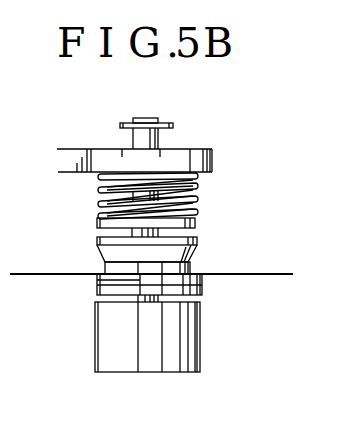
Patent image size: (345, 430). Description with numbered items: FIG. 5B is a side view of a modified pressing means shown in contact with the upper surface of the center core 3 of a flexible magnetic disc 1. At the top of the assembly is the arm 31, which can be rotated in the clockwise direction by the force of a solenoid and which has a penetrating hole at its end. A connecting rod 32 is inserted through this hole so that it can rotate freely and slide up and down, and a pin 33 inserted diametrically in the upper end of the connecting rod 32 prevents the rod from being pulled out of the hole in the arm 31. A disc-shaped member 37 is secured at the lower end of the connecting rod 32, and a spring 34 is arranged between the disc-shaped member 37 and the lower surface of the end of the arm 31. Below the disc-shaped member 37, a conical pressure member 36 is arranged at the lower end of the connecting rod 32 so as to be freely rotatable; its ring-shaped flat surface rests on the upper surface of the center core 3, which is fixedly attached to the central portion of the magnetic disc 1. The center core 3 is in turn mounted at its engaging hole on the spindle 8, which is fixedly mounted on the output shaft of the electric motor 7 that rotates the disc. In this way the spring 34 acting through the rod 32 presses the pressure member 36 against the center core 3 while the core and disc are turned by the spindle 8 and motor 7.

The flexible magnetic disc 1 is at (266, 274).
The center core 3 is at (97, 280).
The electric motor 7 is at (200, 338).
The spindle 8 is at (203, 296).
The arm 31 is at (77, 149).
The connecting rod 32 is at (146, 118).
The pin 33 is at (176, 126).
The spring 34 is at (200, 190).
The conical pressure member 36 is at (197, 252).
The disc-shaped member 37 is at (200, 221).